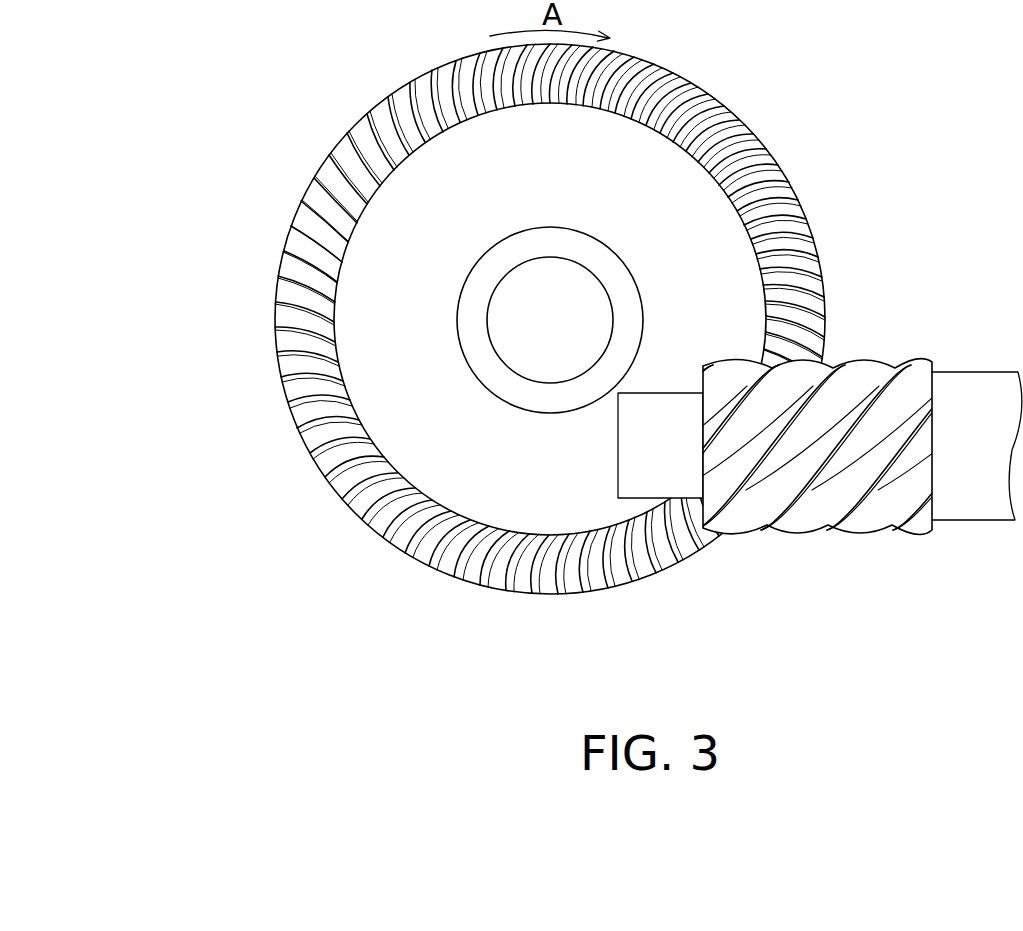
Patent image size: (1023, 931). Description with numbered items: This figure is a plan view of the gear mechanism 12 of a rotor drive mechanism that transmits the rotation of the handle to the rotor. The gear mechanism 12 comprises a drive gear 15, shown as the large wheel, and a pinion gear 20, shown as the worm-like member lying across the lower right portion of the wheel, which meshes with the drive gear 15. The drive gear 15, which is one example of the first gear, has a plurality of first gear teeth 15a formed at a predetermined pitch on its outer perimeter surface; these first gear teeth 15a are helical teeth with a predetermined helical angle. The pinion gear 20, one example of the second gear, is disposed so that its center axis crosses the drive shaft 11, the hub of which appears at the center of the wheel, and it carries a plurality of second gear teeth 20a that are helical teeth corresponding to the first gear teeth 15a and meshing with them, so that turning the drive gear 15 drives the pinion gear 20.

The drive shaft 11 is at (603, 247).
The gear mechanism 12 is at (1022, 152).
The drive gear 15 is at (828, 292).
The first gear teeth 15a is at (346, 462).
The pinion gear 20 is at (928, 347).
The second gear teeth 20a is at (820, 405).